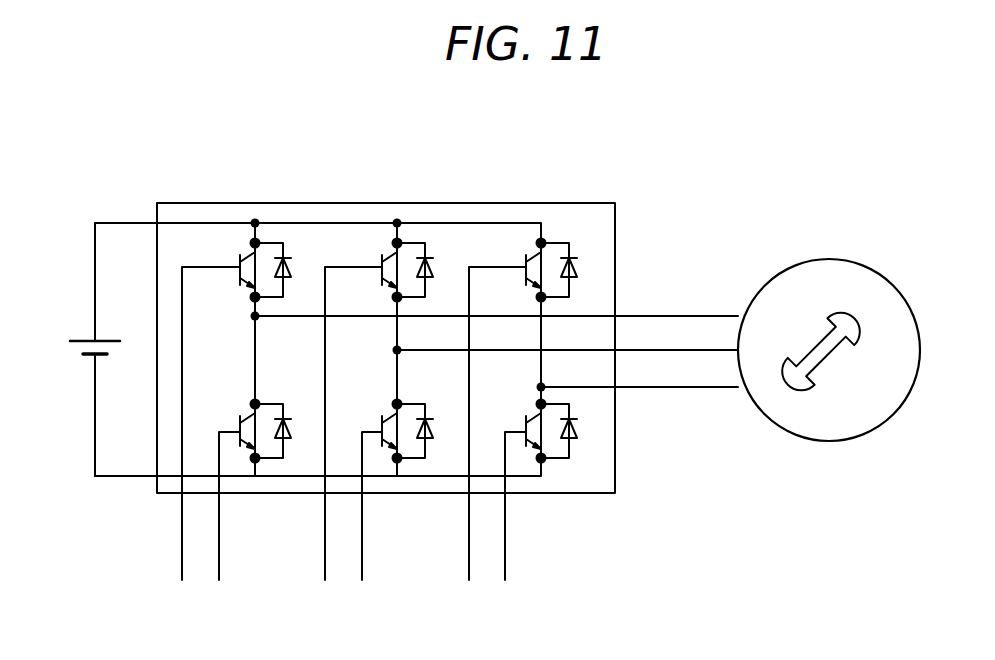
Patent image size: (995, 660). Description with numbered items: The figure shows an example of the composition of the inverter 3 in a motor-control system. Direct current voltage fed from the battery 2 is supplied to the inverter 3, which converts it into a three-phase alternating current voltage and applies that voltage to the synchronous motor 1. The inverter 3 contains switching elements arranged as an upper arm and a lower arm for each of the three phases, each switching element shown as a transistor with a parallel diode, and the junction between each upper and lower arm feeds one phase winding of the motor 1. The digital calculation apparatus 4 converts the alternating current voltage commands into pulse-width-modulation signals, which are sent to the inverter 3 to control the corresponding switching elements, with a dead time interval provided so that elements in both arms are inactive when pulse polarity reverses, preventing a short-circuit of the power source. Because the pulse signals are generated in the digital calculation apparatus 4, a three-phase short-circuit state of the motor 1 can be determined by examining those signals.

The synchronous motor 1 is at (830, 259).
The battery 2 is at (77, 353).
The inverter 3 is at (393, 203).
The digital calculation apparatus 4 is at (341, 452).